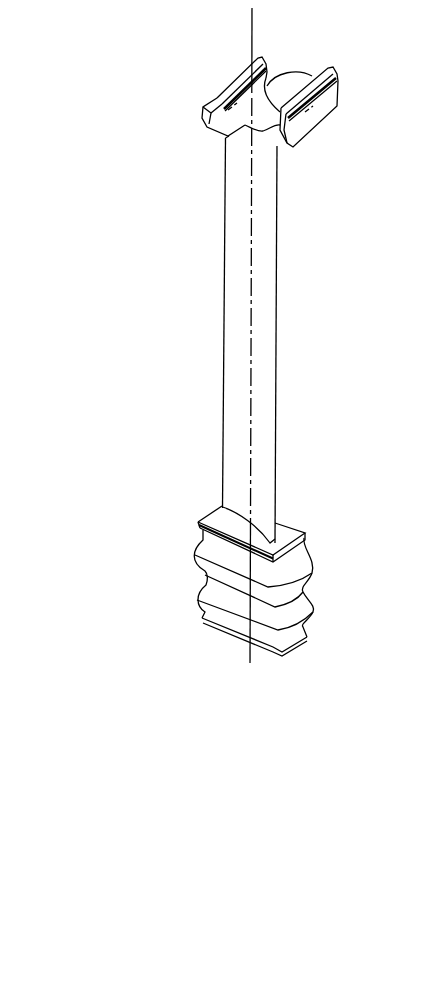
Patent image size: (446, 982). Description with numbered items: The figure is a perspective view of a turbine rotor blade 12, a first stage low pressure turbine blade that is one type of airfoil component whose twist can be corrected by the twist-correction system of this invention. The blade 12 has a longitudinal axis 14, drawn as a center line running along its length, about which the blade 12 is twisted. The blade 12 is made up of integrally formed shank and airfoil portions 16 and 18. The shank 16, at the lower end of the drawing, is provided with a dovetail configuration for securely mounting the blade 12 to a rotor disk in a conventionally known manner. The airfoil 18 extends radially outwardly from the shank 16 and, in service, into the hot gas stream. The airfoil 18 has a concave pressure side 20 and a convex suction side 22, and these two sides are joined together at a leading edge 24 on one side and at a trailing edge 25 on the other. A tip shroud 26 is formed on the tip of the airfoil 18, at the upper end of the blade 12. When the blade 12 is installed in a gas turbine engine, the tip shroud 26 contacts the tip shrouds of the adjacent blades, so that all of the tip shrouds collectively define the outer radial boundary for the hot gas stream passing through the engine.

The turbine rotor blade 12 is at (322, 287).
The longitudinal axis 14 is at (250, 468).
The shank portion 16 is at (308, 578).
The airfoil portion 18 is at (237, 225).
The concave pressure side 20 is at (238, 392).
The convex suction side 22 is at (263, 248).
The leading edge 24 is at (224, 278).
The trailing edge 25 is at (276, 332).
The tip shroud 26 is at (310, 110).